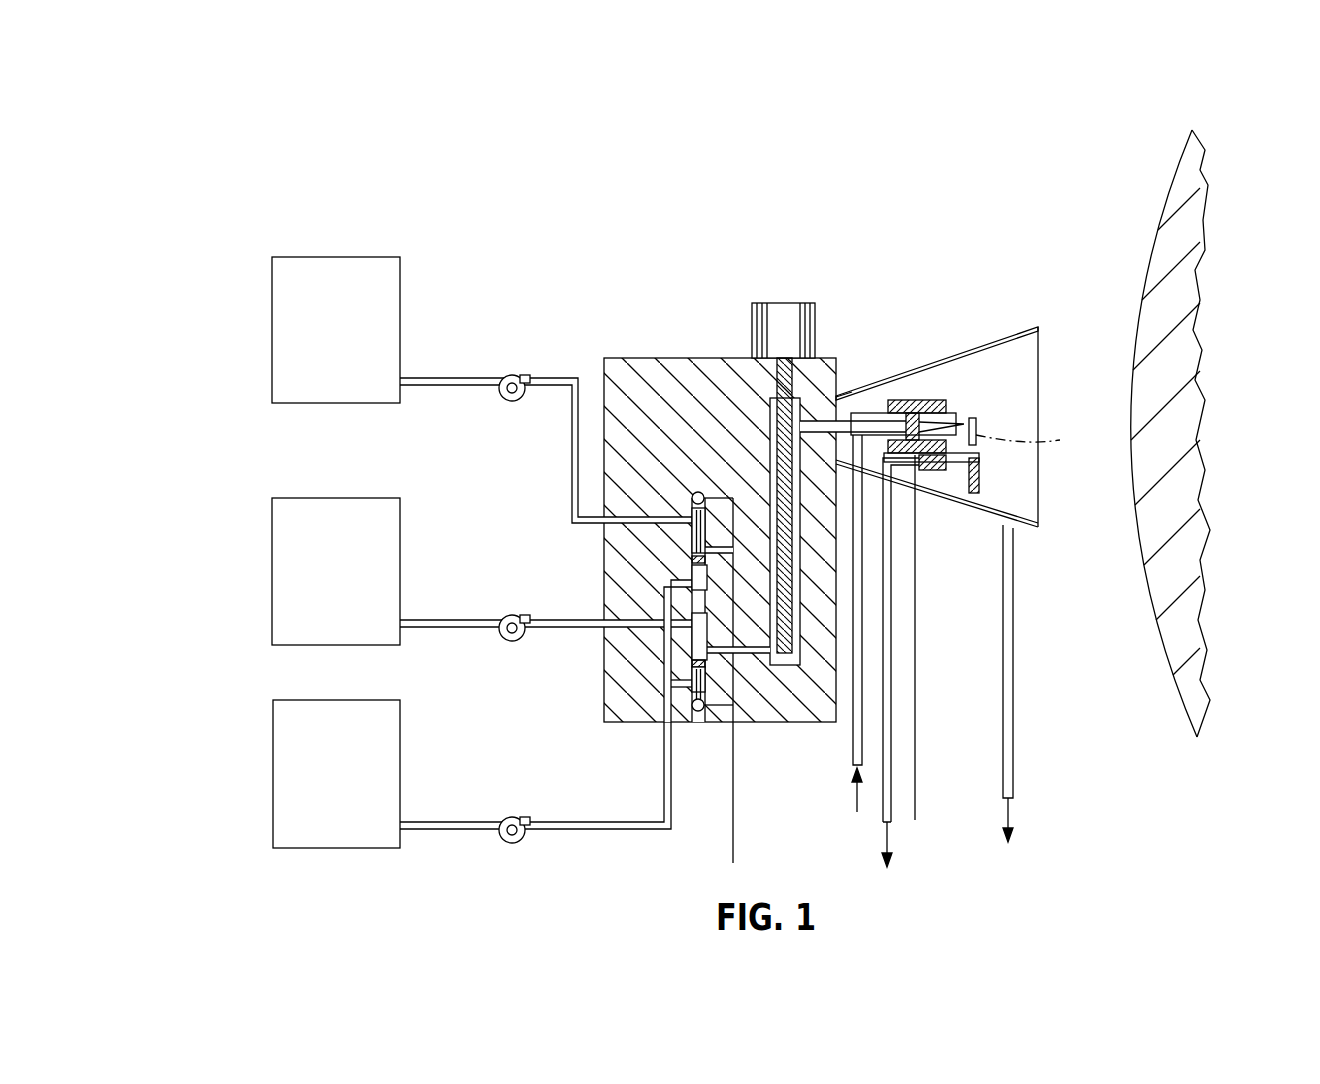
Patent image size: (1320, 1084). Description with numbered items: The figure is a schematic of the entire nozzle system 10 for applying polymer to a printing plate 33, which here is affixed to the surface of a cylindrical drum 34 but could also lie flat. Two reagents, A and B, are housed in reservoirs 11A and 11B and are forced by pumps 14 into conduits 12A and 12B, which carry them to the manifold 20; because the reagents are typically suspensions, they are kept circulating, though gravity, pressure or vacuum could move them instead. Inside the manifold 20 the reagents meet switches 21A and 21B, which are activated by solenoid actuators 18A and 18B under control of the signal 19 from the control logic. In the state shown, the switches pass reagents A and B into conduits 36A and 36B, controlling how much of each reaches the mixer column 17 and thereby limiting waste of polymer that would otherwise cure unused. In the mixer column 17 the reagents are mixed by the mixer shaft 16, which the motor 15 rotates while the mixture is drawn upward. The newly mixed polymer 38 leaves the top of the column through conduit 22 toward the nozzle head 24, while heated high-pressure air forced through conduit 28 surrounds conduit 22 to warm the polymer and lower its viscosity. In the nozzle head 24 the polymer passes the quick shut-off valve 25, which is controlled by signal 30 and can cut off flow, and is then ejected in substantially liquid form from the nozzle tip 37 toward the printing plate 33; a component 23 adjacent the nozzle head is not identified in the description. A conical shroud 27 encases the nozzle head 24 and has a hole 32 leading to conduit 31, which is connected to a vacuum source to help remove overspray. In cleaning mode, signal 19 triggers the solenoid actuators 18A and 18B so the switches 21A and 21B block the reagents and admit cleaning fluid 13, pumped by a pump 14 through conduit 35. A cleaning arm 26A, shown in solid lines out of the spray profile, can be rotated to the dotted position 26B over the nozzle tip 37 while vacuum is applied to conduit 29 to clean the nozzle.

The nozzle system 10 is at (645, 298).
The reservoir 11A is at (272, 352).
The reservoir 11B is at (272, 560).
The conduit 12A is at (423, 386).
The conduit 12B is at (425, 630).
The cleaning fluid 13 is at (348, 791).
The pump 14 is at (512, 402).
The motor 15 is at (787, 304).
The mixer shaft 16 is at (787, 380).
The mixer column 17 is at (770, 413).
The solenoid actuator 18A is at (698, 492).
The solenoid actuator 18B is at (698, 711).
The signal 19 is at (735, 828).
The manifold 20 is at (643, 357).
The switch 21A is at (688, 507).
The switch 21B is at (692, 638).
The conduit 22 is at (822, 422).
The nozzle housing 23 is at (950, 412).
The nozzle head 24 is at (905, 398).
The quick shut-off valve 25 is at (940, 470).
The cleaning arm 26A is at (980, 478).
The position 26B is at (1050, 438).
The shroud 27 is at (1015, 328).
The conduit 28 is at (862, 727).
The conduit 29 is at (880, 830).
The signal 30 is at (917, 778).
The conduit 31 is at (1013, 748).
The hole 32 is at (1032, 530).
The printing plate 33 is at (1165, 652).
The cylindrical drum 34 is at (1195, 565).
The conduit 35 is at (425, 832).
The conduit 36A is at (745, 547).
The conduit 36B is at (755, 658).
The nozzle tip 37 is at (972, 418).
The mixed polymer 38 is at (860, 392).